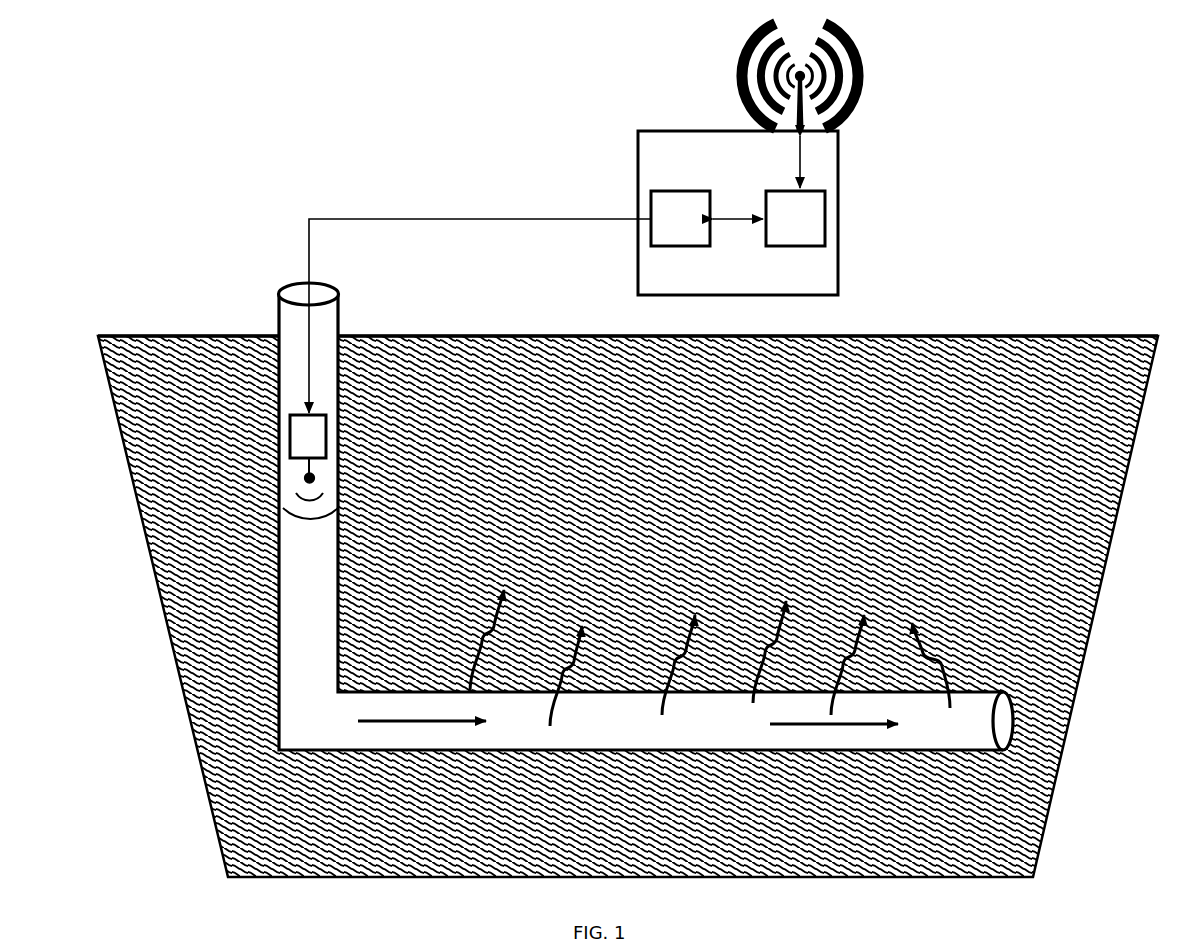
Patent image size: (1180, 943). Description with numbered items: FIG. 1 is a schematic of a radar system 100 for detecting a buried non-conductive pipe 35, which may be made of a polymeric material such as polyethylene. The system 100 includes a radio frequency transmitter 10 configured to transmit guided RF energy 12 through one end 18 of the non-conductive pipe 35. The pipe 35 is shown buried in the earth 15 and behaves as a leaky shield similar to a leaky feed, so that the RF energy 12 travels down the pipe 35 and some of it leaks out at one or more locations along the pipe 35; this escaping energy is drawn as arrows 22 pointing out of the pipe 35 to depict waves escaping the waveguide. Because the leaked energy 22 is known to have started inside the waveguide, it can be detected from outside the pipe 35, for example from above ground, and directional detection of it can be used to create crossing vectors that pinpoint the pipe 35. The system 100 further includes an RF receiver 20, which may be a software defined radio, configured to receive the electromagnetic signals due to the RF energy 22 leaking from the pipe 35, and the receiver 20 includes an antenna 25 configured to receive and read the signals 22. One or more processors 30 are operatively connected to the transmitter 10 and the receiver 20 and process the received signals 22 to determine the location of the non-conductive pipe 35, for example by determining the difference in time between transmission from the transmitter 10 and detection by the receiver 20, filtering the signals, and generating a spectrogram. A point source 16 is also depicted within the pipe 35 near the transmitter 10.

The radio frequency transmitter 10 is at (318, 430).
The guided RF energy 12 is at (316, 512).
The earth 15 is at (868, 328).
The transducer source 16 is at (300, 456).
The end of the non-conductive pipe 18 is at (285, 275).
The RF receiver 20 is at (817, 207).
The leaked RF energy 22 is at (500, 597).
The antenna 25 is at (800, 77).
The processor 30 is at (668, 183).
The non-conductive pipe 35 is at (332, 322).
The radar system 100 is at (630, 160).